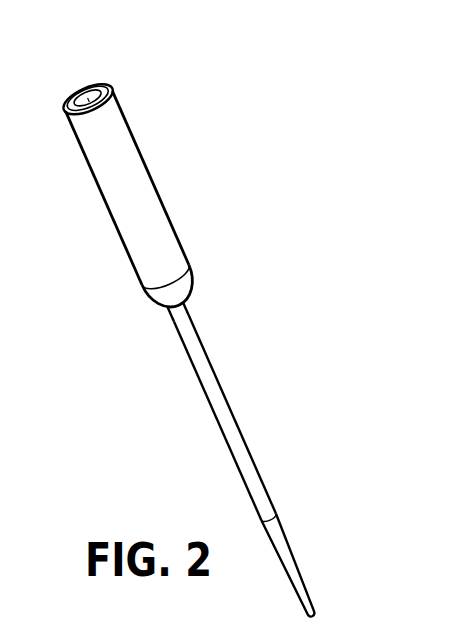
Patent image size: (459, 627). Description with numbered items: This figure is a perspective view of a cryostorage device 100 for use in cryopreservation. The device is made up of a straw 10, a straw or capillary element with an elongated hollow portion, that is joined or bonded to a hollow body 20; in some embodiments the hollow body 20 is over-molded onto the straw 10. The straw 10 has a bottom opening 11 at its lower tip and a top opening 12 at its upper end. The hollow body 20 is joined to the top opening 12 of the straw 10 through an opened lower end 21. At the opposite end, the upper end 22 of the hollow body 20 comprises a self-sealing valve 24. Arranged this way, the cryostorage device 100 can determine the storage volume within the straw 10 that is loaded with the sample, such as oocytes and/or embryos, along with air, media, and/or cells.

The cryostorage device 100 is at (215, 346).
The hollow body 20 is at (131, 197).
The upper end 22 is at (88, 99).
The self-sealing valve 24 is at (87, 98).
The opened lower end 21 is at (172, 290).
The top opening 12 is at (177, 310).
The straw 10 is at (247, 467).
The bottom opening 11 is at (290, 567).